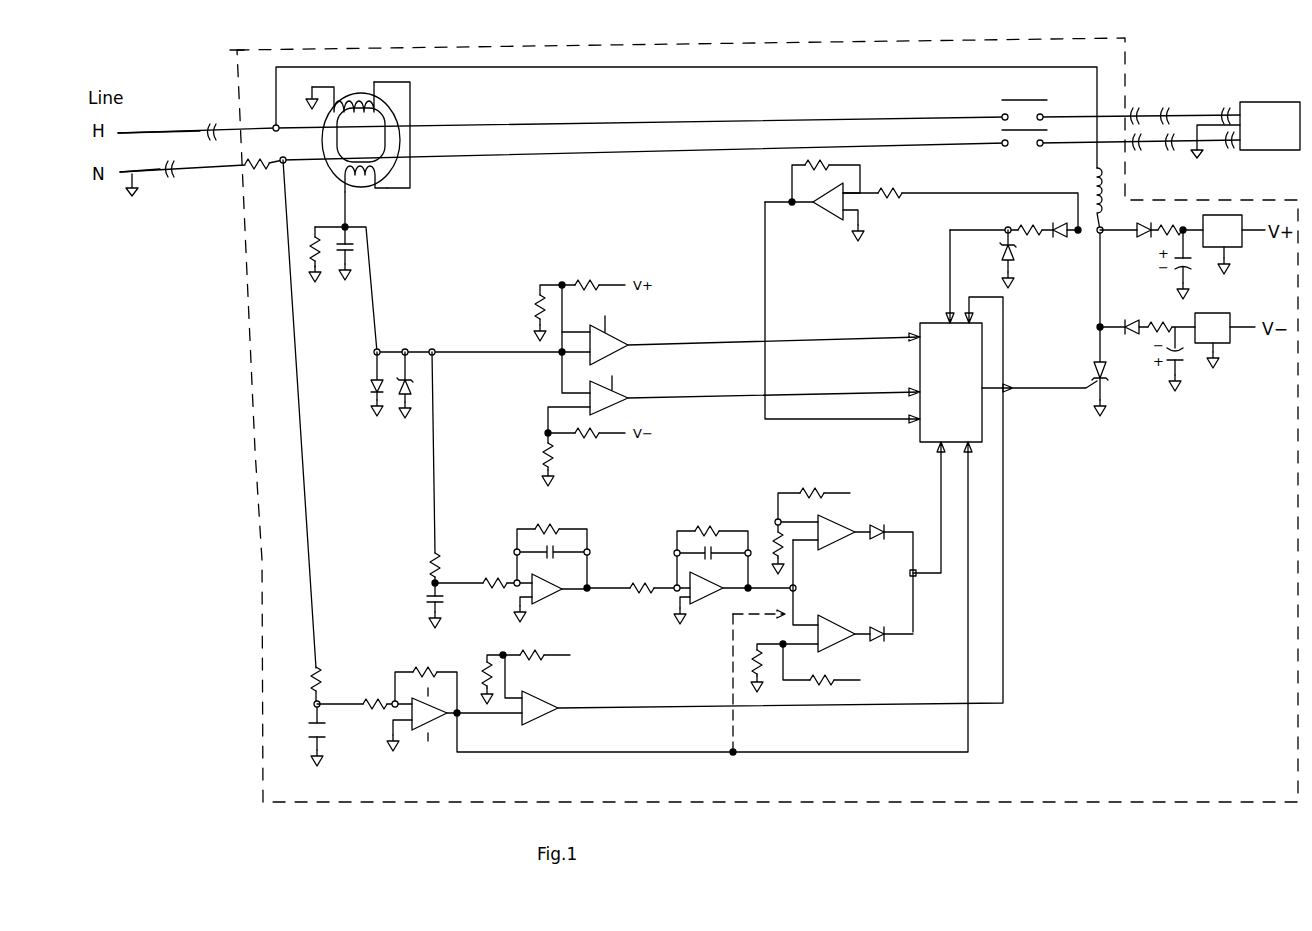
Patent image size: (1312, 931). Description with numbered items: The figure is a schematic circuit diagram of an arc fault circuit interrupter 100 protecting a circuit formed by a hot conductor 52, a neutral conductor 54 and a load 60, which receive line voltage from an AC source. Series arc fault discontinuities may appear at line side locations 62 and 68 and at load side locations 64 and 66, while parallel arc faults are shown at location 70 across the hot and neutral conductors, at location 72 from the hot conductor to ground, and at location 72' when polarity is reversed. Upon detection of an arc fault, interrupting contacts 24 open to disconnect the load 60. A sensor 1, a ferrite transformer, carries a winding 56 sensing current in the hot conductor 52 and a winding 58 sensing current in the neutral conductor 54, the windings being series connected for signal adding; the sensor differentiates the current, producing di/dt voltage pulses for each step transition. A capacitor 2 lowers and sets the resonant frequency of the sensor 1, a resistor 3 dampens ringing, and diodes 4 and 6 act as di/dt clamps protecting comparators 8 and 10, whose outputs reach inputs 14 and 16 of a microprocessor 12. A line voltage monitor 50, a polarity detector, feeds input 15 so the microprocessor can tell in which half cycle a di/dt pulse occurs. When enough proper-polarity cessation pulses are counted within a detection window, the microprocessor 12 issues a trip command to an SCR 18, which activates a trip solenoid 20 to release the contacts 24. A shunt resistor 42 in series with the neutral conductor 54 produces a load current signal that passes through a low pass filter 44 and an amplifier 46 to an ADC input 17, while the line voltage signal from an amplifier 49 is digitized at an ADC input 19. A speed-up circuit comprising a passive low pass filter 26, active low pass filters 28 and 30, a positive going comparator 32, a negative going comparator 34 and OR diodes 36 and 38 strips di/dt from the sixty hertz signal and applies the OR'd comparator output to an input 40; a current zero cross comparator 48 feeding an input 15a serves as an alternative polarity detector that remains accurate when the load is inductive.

The arc fault circuit interrupter 100 is at (236, 57).
The sensor 1 is at (392, 112).
The capacitor 2 is at (356, 246).
The resistor 3 is at (303, 239).
The diode 4 is at (370, 393).
The diode 6 is at (420, 387).
The comparator 8 is at (619, 333).
The comparator 10 is at (622, 387).
The microprocessor 12 is at (985, 421).
The input 14 is at (876, 334).
The input 15 is at (940, 317).
The input 15a is at (966, 298).
The input 16 is at (895, 387).
The ADC input 17 is at (982, 477).
The SCR 18 is at (1090, 364).
The ADC input 19 is at (905, 423).
The trip solenoid 20 is at (1088, 180).
The interrupting contacts 24 is at (1018, 98).
The passive low pass filter 26 is at (422, 581).
The active low pass filter 28 is at (571, 520).
The active low pass filter 30 is at (693, 520).
The positive going signal detecting comparator 32 is at (843, 522).
The negative going signal detecting comparator 34 is at (838, 625).
The OR diode 36 is at (880, 545).
The OR diode 38 is at (893, 637).
The input 40 is at (932, 461).
The shunt resistor 42 is at (253, 174).
The low pass filter 44 is at (288, 708).
The amplifier 46 is at (395, 658).
The current zero cross comparator 48 is at (565, 690).
The amplifier 49 is at (815, 225).
The line voltage monitor 50 is at (1053, 256).
The hot conductor 52 is at (162, 131).
The neutral conductor 54 is at (162, 192).
The winding 56 is at (364, 90).
The winding 58 is at (383, 193).
The load 60 is at (1264, 101).
The location 62 is at (211, 123).
The location 64 is at (1172, 102).
The location 66 is at (1155, 168).
The location 68 is at (186, 180).
The location 70 is at (1135, 100).
The location 72 is at (1224, 91).
The location 72' is at (1223, 156).